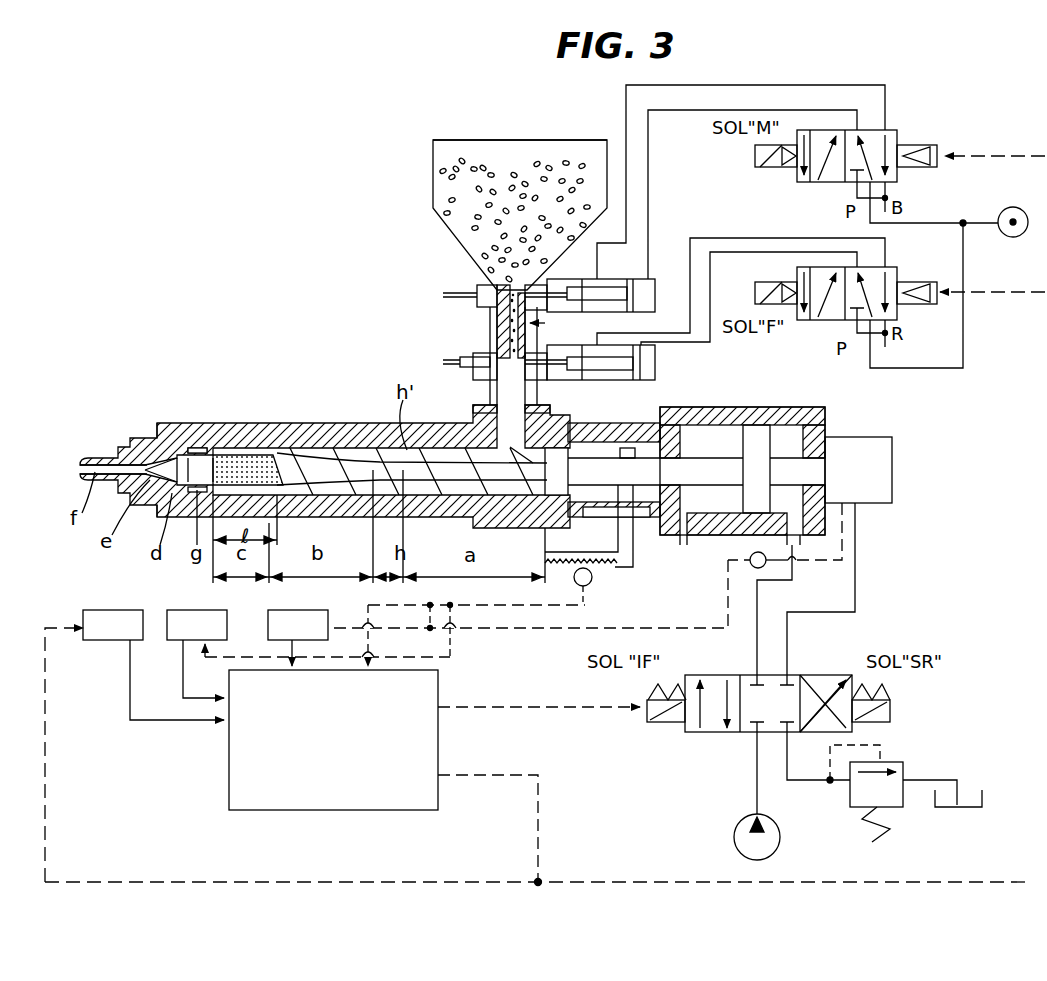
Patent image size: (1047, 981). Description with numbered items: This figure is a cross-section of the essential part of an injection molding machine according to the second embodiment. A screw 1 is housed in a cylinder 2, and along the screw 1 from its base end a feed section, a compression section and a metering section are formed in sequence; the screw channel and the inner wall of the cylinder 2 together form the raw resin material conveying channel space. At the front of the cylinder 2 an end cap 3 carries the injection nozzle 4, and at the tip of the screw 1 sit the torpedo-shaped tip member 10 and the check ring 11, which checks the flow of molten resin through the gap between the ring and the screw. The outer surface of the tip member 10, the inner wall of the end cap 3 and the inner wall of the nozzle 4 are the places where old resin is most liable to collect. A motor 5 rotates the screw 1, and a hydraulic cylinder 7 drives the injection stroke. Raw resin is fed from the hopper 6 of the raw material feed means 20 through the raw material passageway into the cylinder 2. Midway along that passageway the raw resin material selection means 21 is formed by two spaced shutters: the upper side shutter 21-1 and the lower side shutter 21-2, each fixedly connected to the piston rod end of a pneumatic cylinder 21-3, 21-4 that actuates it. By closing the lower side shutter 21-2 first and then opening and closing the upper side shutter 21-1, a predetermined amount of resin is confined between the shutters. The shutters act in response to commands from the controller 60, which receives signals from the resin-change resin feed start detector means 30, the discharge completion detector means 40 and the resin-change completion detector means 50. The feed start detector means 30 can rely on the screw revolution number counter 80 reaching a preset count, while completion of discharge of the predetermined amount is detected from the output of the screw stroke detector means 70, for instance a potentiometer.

The screw 1 is at (318, 460).
The cylinder 2 is at (260, 423).
The end cap 3 is at (157, 423).
The injection nozzle 4 is at (100, 467).
The motor 5 is at (875, 460).
The hopper 6 is at (500, 170).
The hydraulic cylinder 7 is at (768, 407).
The torpedo-shaped tip member 10 is at (168, 467).
The check ring 11 is at (197, 450).
The raw material feed means 20 is at (455, 140).
The raw resin material selection means 21 is at (530, 308).
The upper side shutter 21-1 is at (475, 273).
The lower side shutter 21-2 is at (462, 360).
The pneumatic cylinder 21-3 is at (655, 279).
The pneumatic cylinder 21-4 is at (655, 360).
The resin-change resin feed start detector means 30 is at (296, 620).
The discharge completion detector means 40 is at (200, 620).
The resin-change completion detector means 50 is at (103, 618).
The controller 60 is at (252, 733).
The screw stroke detector means 70 is at (592, 581).
The screw revolution number counter 80 is at (745, 549).